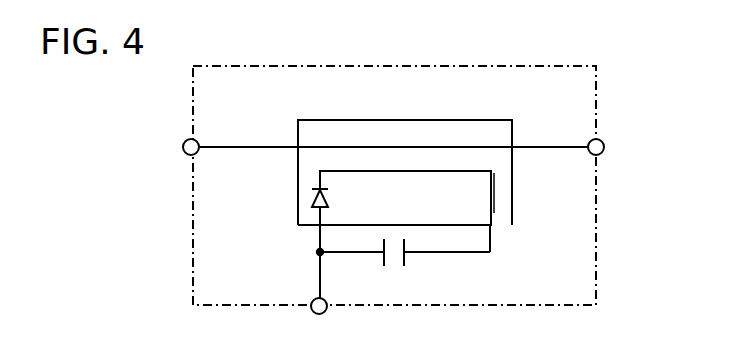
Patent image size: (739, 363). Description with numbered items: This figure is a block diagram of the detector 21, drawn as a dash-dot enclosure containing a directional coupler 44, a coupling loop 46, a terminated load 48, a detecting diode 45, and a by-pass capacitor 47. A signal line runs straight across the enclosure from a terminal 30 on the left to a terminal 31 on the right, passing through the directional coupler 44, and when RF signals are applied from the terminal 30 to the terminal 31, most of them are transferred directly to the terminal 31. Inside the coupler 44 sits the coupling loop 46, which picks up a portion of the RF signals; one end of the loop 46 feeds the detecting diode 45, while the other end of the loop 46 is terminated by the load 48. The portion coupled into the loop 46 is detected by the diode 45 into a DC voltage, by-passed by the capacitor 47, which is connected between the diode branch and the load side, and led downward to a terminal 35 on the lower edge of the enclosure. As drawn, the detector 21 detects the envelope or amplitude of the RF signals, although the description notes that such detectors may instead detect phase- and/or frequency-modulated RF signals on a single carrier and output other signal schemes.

The detector 21 is at (517, 65).
The terminal 30 is at (185, 154).
The terminal 31 is at (604, 149).
The terminal 35 is at (325, 312).
The directional coupler 44 is at (362, 119).
The detecting diode 45 is at (313, 206).
The coupling loop 46 is at (416, 172).
The by-pass capacitor 47 is at (404, 262).
The terminated load 48 is at (491, 224).